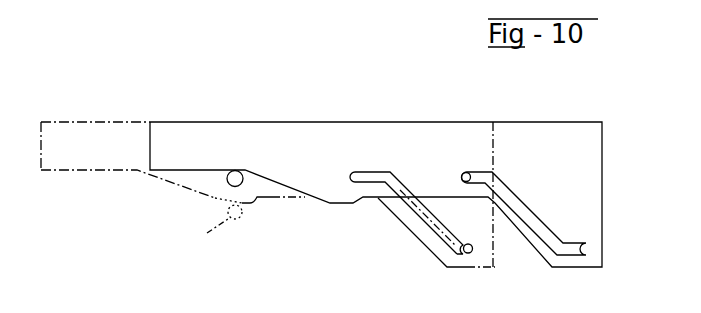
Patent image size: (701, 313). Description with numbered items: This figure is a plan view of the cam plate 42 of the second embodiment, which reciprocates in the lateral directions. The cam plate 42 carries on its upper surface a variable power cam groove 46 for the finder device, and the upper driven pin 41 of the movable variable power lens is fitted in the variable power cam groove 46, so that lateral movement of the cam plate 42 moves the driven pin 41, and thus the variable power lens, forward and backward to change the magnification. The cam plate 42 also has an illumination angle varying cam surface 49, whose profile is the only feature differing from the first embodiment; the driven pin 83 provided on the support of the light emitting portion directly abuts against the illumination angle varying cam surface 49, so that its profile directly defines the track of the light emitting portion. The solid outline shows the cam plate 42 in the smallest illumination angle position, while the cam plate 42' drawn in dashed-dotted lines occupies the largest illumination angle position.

The cam plate in largest illumination angle position 42' is at (141, 135).
The cam plate 42 is at (376, 167).
The driven pin 41 is at (466, 172).
The variable power cam groove 46 is at (529, 218).
The driven pin 83 is at (228, 176).
The illumination angle varying cam surface 49 is at (285, 188).